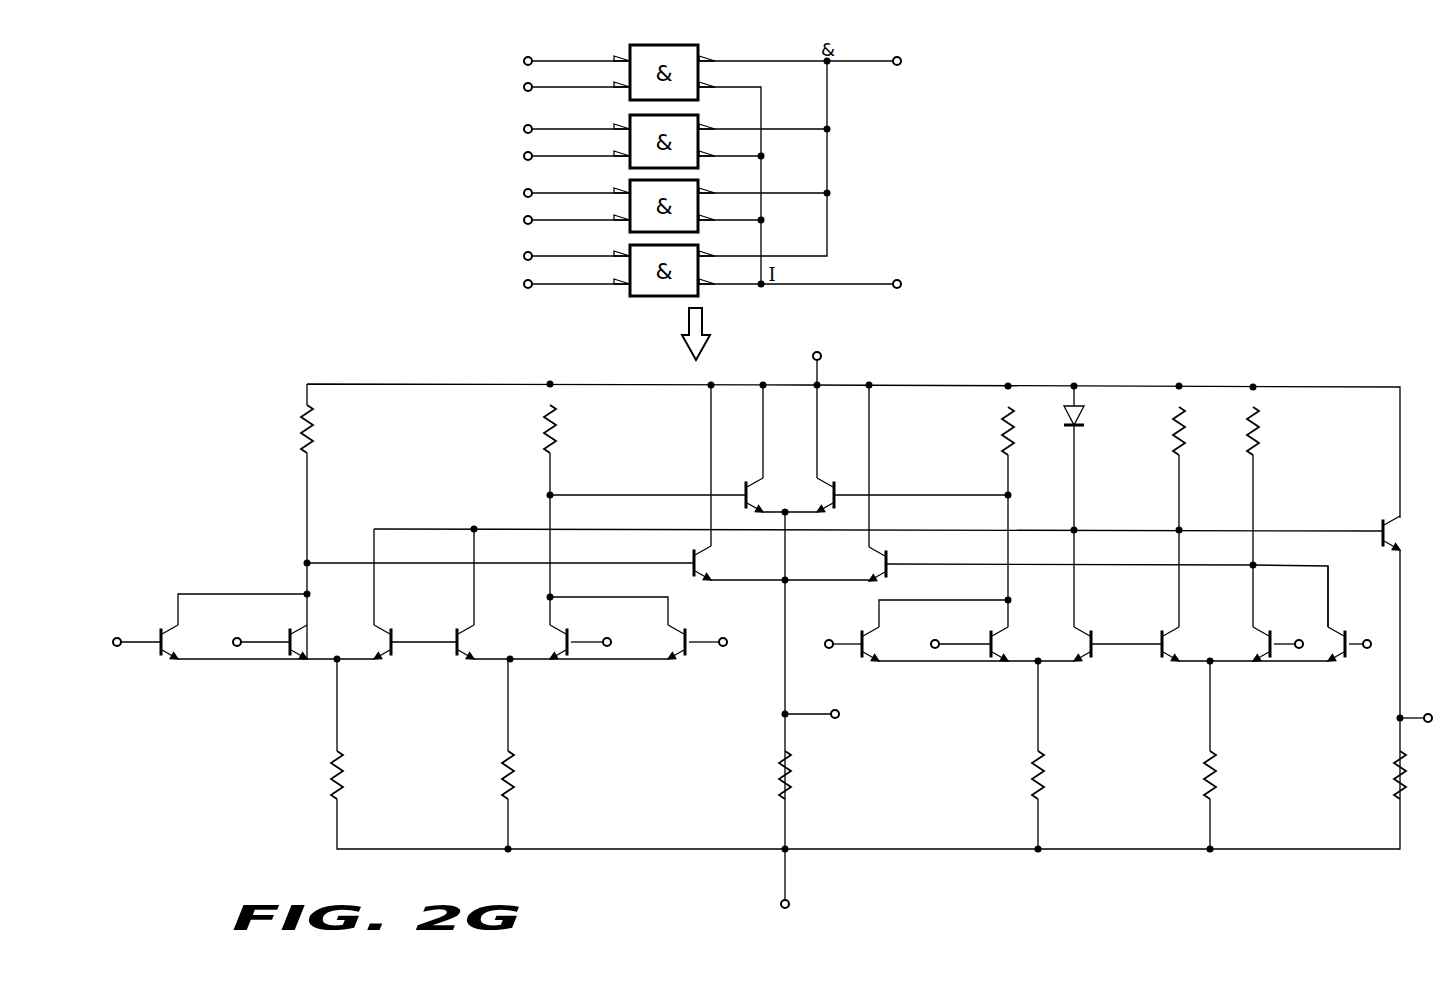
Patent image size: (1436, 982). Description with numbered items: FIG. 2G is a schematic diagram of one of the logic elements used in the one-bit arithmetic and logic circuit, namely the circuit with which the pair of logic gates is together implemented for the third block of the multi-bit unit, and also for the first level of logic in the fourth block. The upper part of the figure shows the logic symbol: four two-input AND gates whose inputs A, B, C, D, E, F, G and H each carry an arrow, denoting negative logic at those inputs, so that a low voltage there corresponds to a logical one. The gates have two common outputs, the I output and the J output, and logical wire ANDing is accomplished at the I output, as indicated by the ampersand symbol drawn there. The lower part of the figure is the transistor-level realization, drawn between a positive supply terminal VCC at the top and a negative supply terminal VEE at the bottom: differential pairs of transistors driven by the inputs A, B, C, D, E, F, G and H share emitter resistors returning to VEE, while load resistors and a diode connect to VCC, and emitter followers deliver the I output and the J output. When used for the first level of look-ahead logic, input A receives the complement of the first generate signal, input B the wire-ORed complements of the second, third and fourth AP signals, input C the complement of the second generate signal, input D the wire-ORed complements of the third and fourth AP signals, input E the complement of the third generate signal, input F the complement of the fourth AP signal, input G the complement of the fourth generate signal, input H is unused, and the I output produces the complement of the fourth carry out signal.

The A input A is at (363, 352).
The B input B is at (423, 365).
The C input C is at (566, 386).
The D input D is at (623, 399).
The E input E is at (682, 419).
The F input F is at (747, 432).
The G input G is at (911, 450).
The H input H is at (945, 464).
The I output I is at (1131, 387).
The J output J is at (839, 499).
The positive supply terminal VCC is at (835, 365).
The negative supply terminal VEE is at (802, 885).